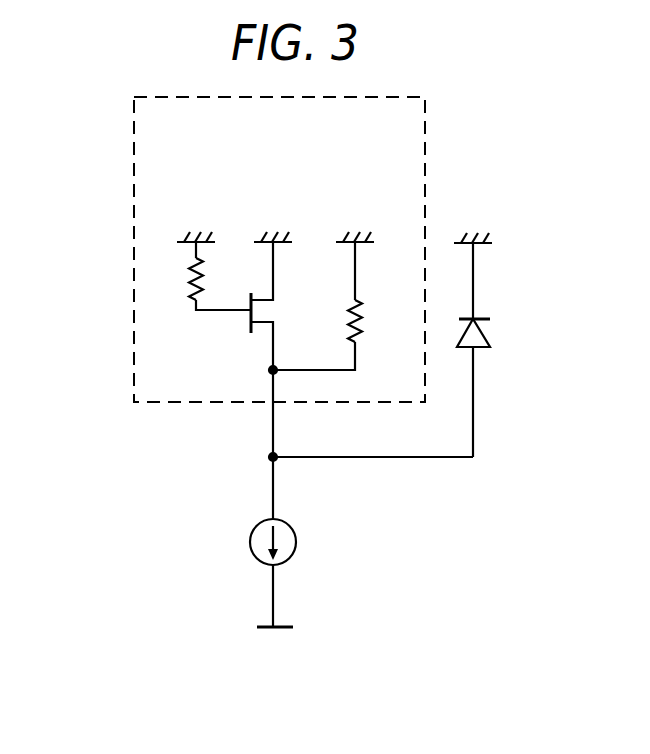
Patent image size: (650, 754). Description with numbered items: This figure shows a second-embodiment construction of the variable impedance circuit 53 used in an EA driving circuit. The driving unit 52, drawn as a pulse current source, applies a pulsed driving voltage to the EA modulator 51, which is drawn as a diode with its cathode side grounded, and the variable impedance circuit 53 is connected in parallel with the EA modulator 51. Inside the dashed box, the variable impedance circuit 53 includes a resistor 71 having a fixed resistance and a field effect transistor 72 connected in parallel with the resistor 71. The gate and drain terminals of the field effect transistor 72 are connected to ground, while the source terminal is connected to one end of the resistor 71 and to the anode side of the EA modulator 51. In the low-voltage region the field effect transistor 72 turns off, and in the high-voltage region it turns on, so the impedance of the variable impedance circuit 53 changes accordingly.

The EA modulator 51 is at (480, 352).
The driving unit 52 is at (250, 540).
The variable impedance circuit 53 is at (133, 320).
The resistor 71 is at (362, 342).
The FET 72 is at (247, 324).